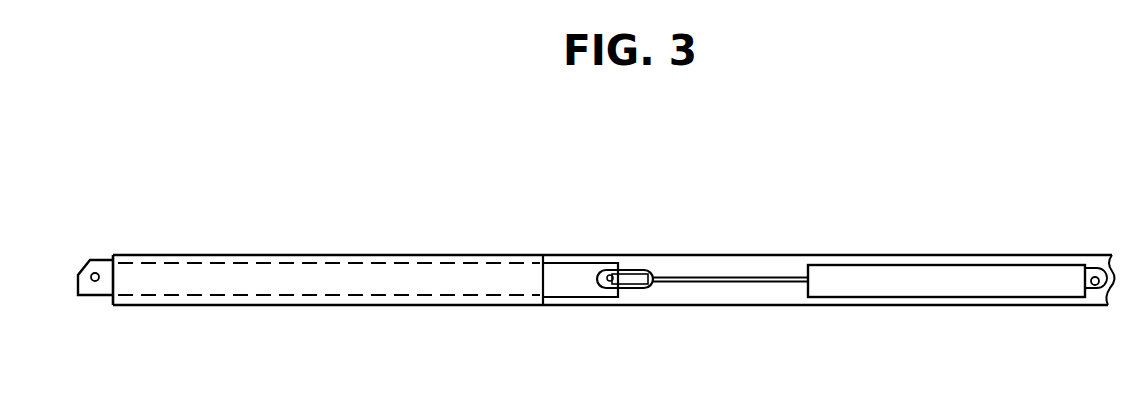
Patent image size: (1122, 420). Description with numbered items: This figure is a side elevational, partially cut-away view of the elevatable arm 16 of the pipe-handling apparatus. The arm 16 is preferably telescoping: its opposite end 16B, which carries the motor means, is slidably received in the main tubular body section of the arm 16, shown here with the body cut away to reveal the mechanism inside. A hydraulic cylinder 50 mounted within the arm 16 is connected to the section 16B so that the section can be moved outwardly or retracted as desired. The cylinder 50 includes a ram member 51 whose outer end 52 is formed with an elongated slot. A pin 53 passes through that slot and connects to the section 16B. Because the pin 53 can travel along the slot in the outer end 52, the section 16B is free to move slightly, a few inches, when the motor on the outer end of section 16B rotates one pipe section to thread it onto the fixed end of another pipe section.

The arm 16 is at (720, 256).
The opposite end of arm 16B is at (100, 260).
The hydraulic cylinder 50 is at (940, 272).
The ram member 51 is at (723, 283).
The outer end of ram member 52 is at (642, 288).
The pin 53 is at (610, 275).